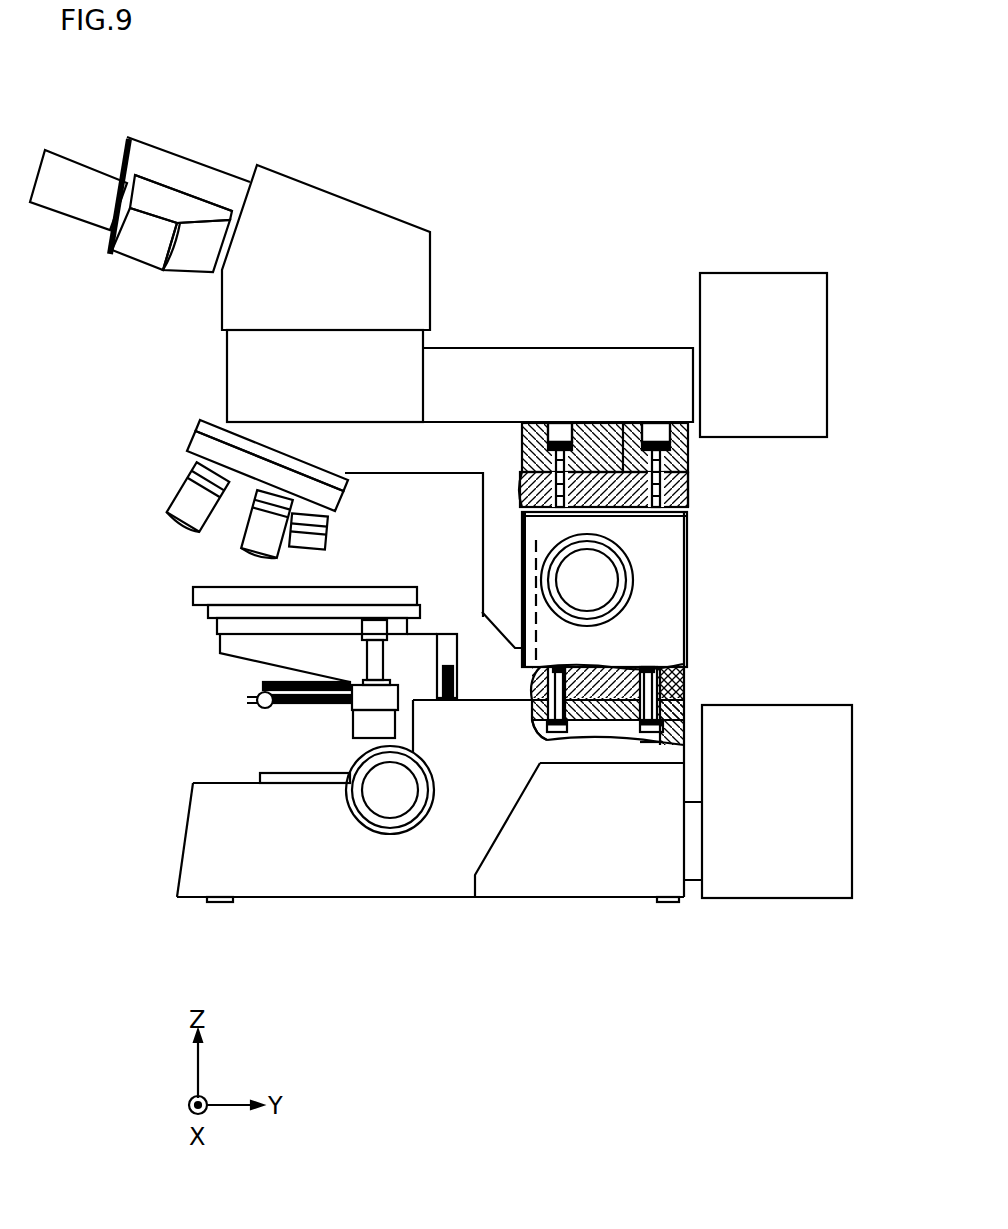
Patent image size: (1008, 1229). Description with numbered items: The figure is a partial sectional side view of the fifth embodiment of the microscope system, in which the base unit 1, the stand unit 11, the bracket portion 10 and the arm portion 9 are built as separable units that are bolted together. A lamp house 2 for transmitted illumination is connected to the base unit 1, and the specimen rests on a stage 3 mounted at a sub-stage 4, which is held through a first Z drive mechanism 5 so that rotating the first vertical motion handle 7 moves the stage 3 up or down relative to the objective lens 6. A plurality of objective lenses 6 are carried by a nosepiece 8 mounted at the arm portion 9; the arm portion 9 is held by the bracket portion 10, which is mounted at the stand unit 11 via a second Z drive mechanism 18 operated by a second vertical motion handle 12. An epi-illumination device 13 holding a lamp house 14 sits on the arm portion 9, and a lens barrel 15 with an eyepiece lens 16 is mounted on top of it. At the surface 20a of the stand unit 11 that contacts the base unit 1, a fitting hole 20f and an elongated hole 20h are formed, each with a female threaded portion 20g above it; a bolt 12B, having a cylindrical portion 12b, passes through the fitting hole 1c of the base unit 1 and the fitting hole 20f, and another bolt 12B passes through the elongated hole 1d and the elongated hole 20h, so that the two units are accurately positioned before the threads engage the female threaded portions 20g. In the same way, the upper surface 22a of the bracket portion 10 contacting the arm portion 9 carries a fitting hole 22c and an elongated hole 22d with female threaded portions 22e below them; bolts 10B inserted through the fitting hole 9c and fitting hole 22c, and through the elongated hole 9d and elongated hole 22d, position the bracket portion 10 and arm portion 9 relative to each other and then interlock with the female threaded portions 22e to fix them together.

The base unit 1 is at (253, 902).
The fitting hole 1c is at (542, 740).
The elongated hole 1d is at (653, 745).
The lamp house 2 is at (774, 900).
The stage 3 is at (193, 590).
The sub-stage 4 is at (222, 653).
The first Z drive mechanism 5 is at (462, 667).
The objective lens 6 is at (170, 495).
The first vertical motion handle 7 is at (390, 805).
The nosepiece 8 is at (192, 428).
The arm portion 9 is at (365, 470).
The fitting hole 9c is at (538, 462).
The elongated hole 9d is at (680, 465).
The bracket portion 10 is at (497, 590).
The bolt 10B is at (560, 433).
The stand unit 11 is at (690, 555).
The second vertical motion handle 12 is at (613, 578).
The cylindrical portion 12b is at (578, 722).
The bolt 12B is at (551, 734).
The epi-illumination device 13 is at (462, 348).
The lamp house 14 is at (770, 273).
The lens barrel 15 is at (330, 193).
The eyepiece lens 16 is at (72, 150).
The second Z drive mechanism 18 is at (525, 572).
The surface 20a is at (688, 693).
The fitting hole 20f is at (530, 688).
The female threaded portion 20g is at (666, 672).
The elongated hole 20h is at (634, 678).
The upper surface 22a is at (626, 423).
The fitting hole 22c is at (525, 487).
The elongated hole 22d is at (690, 490).
The female threaded portion 22e is at (522, 500).